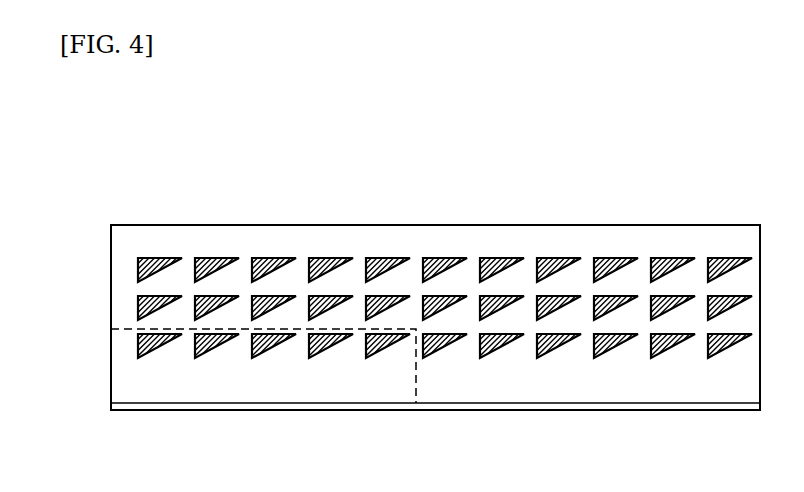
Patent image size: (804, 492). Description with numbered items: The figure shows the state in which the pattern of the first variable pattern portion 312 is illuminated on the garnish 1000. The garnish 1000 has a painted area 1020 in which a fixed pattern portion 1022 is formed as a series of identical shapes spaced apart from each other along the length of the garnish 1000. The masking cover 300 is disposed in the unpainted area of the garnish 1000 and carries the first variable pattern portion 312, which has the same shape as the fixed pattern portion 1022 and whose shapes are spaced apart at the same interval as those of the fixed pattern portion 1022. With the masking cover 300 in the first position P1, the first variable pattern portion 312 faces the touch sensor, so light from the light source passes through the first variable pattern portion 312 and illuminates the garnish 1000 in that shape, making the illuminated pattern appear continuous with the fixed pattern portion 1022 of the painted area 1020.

The garnish 1000 is at (488, 226).
The painted area 1020 is at (445, 304).
The fixed pattern portion 1022 is at (673, 258).
The masking cover 300 is at (435, 425).
The first variable pattern portion 312 is at (160, 348).
The first position P1 is at (110, 370).